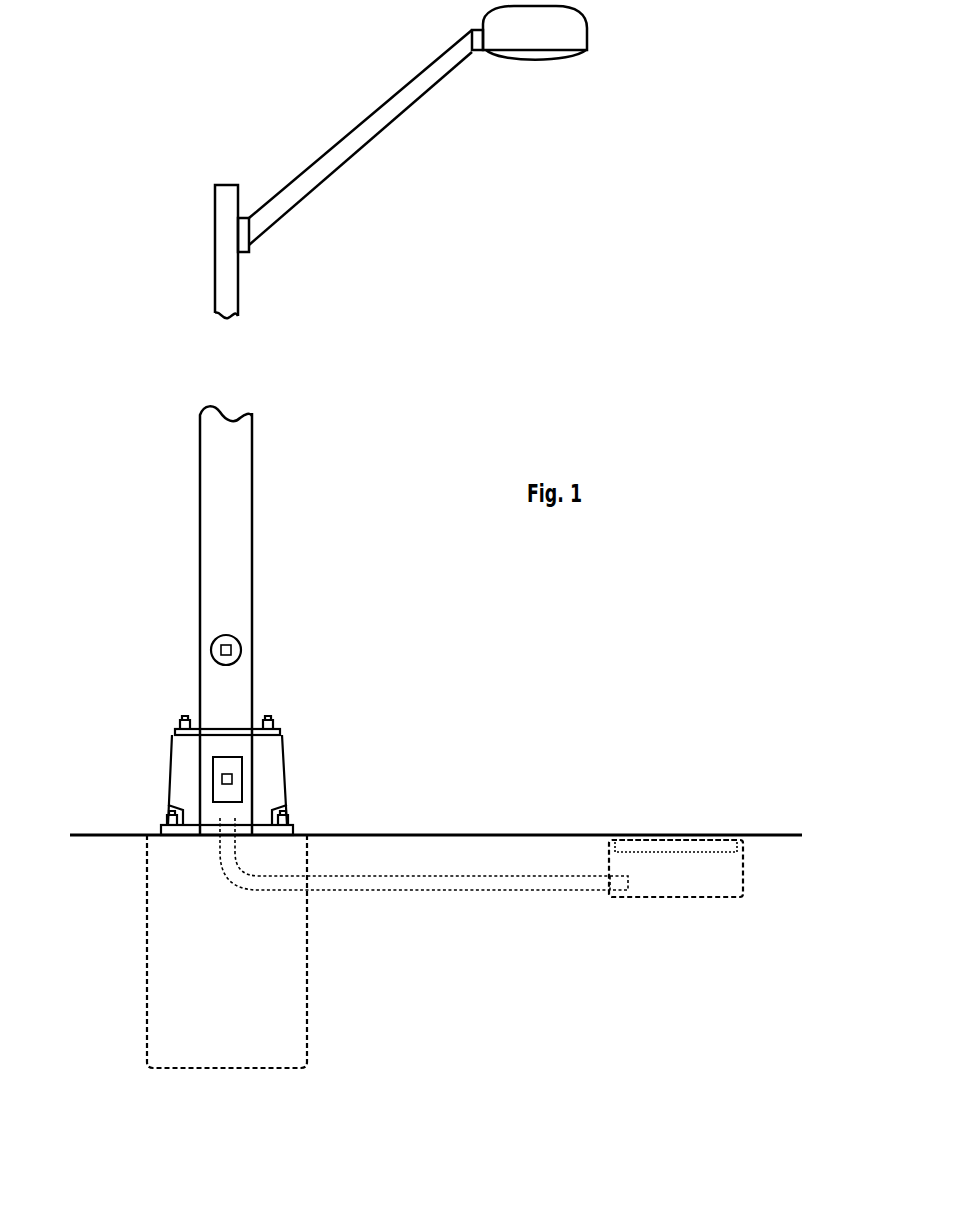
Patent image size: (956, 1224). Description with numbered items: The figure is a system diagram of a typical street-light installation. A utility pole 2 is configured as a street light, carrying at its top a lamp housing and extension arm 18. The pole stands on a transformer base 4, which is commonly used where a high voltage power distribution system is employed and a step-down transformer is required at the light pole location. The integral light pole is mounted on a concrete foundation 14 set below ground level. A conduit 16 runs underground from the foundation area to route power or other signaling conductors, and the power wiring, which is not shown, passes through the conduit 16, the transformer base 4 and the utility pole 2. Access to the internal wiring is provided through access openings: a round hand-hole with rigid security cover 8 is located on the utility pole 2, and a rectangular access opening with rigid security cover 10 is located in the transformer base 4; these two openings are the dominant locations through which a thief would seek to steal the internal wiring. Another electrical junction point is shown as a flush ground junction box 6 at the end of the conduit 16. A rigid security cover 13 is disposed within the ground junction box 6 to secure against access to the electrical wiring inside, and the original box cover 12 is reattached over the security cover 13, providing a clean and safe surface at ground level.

The utility pole 2 is at (239, 305).
The transformer base 4 is at (284, 751).
The flush ground junction box 6 is at (744, 871).
The round hand-hole with rigid security cover 8 is at (240, 644).
The rectangular access opening with rigid security cover 10 is at (243, 775).
The original box cover 12 is at (650, 834).
The rigid security cover 13 is at (690, 851).
The concrete foundation 14 is at (308, 940).
The conduit 16 is at (465, 891).
The lamp housing and extension arm 18 is at (377, 133).